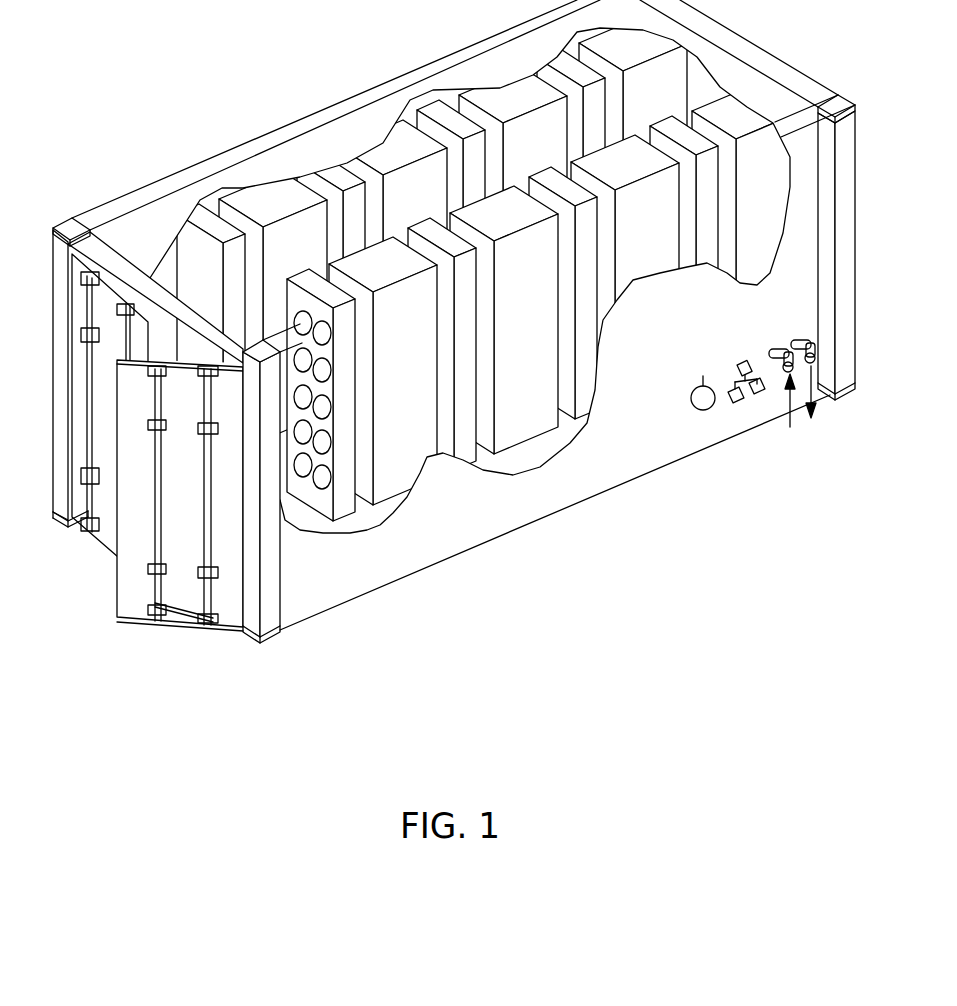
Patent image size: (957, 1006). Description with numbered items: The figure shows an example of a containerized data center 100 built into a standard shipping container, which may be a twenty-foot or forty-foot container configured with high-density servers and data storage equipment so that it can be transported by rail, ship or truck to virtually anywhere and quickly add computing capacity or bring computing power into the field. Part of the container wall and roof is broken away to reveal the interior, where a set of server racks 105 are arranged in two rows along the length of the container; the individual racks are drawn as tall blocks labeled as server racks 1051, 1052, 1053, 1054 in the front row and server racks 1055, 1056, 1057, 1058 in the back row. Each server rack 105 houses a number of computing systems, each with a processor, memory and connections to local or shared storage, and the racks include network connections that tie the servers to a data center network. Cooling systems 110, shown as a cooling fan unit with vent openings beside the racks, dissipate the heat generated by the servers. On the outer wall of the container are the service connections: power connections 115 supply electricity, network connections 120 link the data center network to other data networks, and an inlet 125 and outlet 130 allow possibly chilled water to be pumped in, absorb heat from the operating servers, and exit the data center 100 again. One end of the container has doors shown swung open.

The container / enclosure 100 is at (332, 608).
The battery modules 105 is at (488, 299).
The first battery module 1051 is at (430, 352).
The second battery module 1052 is at (550, 300).
The third battery module 1053 is at (670, 248).
The fourth battery module 1054 is at (790, 198).
The fifth battery module 1055 is at (318, 258).
The sixth battery module 1056 is at (440, 207).
The seventh battery module 1057 is at (560, 155).
The eighth battery module 1058 is at (680, 105).
The cooling / ventilation unit 110 is at (326, 462).
The power connection 115 is at (706, 410).
The communication / network connection 120 is at (745, 362).
The coolant inlet 125 is at (790, 425).
The coolant outlet 130 is at (812, 375).